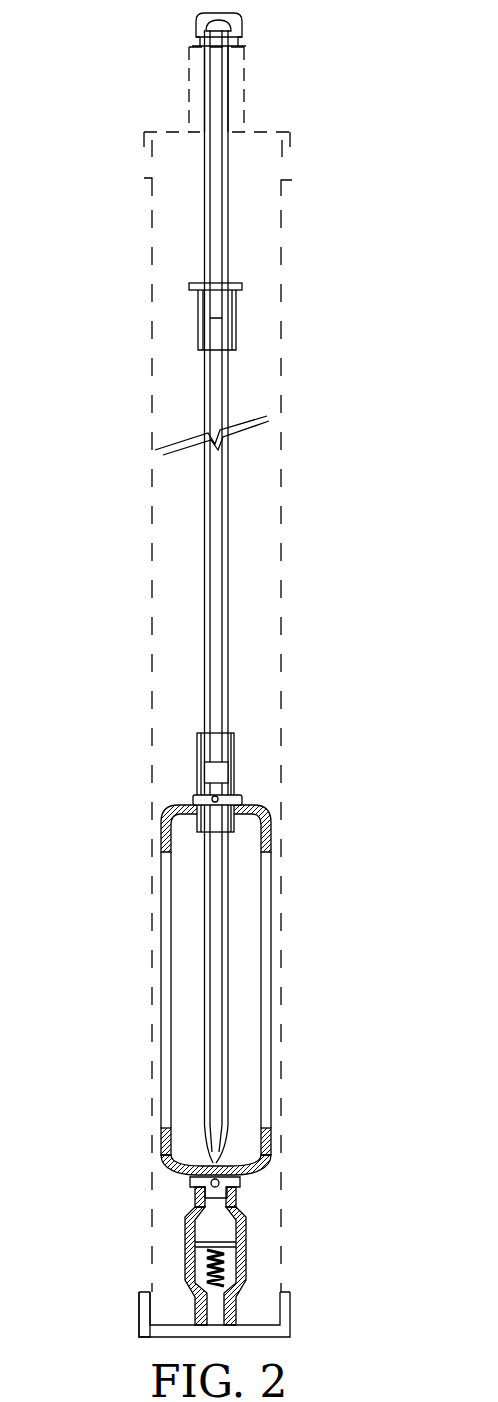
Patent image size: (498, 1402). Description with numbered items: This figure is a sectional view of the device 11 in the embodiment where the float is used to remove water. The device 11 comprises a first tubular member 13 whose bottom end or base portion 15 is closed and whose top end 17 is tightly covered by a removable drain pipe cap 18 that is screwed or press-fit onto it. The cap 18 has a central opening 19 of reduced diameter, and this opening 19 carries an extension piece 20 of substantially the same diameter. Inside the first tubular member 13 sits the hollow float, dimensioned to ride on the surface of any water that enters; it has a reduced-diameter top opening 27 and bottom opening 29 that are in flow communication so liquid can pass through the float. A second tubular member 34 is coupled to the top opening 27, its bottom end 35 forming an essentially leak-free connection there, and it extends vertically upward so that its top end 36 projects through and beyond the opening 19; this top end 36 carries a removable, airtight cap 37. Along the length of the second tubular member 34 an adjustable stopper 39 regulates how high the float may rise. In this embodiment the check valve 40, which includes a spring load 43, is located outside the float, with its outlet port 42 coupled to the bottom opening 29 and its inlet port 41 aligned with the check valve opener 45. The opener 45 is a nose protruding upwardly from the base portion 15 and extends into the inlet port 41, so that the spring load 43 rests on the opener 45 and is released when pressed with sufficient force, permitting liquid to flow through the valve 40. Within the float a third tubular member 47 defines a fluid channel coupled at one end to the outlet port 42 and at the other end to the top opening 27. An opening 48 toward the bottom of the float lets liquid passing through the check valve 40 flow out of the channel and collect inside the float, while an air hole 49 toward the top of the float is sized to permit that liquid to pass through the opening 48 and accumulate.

The device 11 is at (290, 680).
The first tubular member 13 is at (287, 478).
The base portion 15 is at (211, 1319).
The top end 17 is at (158, 164).
The drain pipe cap 18 is at (298, 157).
The opening 19 is at (203, 117).
The extension piece 20 is at (245, 82).
The top opening 27 is at (202, 795).
The bottom opening 29 is at (192, 1187).
The second tubular member 34 is at (215, 497).
The bottom end 35 is at (232, 772).
The top end 36 is at (200, 34).
The cap 37 is at (240, 24).
The stopper 39 is at (198, 300).
The check valve 40 is at (185, 1263).
The inlet port 41 is at (235, 1305).
The outlet port 42 is at (240, 1205).
The spring load 43 is at (245, 1265).
The check valve opener 45 is at (208, 1310).
The third tubular member 47 is at (218, 990).
The opening 48 is at (223, 1148).
The air hole 49 is at (225, 840).